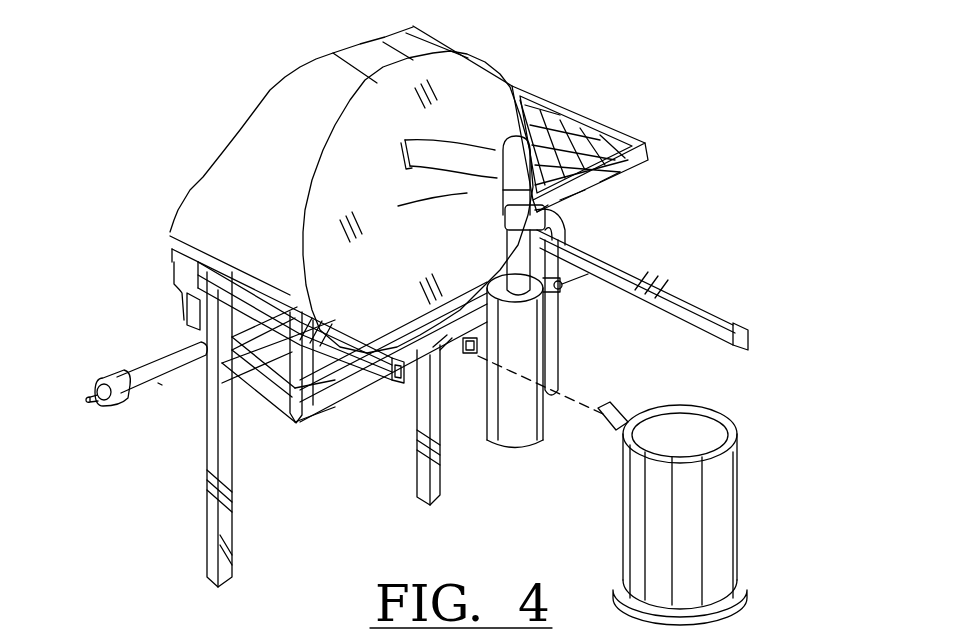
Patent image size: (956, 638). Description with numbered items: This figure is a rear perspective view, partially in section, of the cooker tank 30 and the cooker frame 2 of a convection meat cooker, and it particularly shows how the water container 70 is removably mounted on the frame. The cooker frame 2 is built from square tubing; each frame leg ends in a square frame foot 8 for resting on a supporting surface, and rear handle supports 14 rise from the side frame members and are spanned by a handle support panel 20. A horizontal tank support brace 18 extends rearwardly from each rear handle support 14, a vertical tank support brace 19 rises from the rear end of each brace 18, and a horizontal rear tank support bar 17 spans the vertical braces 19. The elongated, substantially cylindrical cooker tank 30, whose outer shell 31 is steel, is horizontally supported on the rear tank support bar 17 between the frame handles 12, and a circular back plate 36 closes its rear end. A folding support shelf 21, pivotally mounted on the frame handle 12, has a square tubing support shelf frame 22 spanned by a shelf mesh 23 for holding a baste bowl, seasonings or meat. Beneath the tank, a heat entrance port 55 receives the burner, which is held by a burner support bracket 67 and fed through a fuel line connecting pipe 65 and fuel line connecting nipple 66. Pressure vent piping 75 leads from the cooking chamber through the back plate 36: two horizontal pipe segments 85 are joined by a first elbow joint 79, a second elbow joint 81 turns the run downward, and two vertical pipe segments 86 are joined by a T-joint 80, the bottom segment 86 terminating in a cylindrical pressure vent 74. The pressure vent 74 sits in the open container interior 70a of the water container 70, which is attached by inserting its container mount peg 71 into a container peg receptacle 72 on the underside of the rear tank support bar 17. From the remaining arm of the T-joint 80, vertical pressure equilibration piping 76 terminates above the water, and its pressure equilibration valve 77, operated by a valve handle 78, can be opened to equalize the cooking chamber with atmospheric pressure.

The cooker frame 2 is at (411, 402).
The frame foot 8 is at (657, 0).
The frame handle 12 is at (240, 295).
The rear handle support 14 is at (230, 517).
The rear tank support bar 17 is at (327, 403).
The horizontal tank support brace 18 is at (247, 400).
The vertical tank support brace 19 is at (320, 360).
The handle support panel 20 is at (232, 556).
The folding support shelf 21 is at (620, 113).
The support shelf frame 22 is at (641, 154).
The shelf mesh 23 is at (551, 108).
The cooker tank 30 is at (238, 126).
The outer shell 31 is at (362, 76).
The back plate 36 is at (440, 77).
The heat entrance port 55 is at (182, 290).
The fuel line connecting pipe 65 is at (160, 383).
The fuel line connecting nipple 66 is at (96, 405).
The burner support bracket 67 is at (182, 335).
The water container 70 is at (727, 496).
The container interior 70a is at (698, 420).
The container mount peg 71 is at (610, 410).
The container peg receptacle 72 is at (457, 380).
The pressure vent 74 is at (547, 440).
The pressure vent piping 75 is at (493, 303).
The pressure equilibration piping 76 is at (553, 353).
The pressure equilibration valve 77 is at (553, 268).
The valve handle 78 is at (562, 287).
The first elbow joint 79 is at (457, 153).
The T-joint 80 is at (537, 201).
The second elbow joint 81 is at (515, 150).
The horizontal pipe segments 85 is at (417, 176).
The vertical pipe segments 86 is at (513, 262).